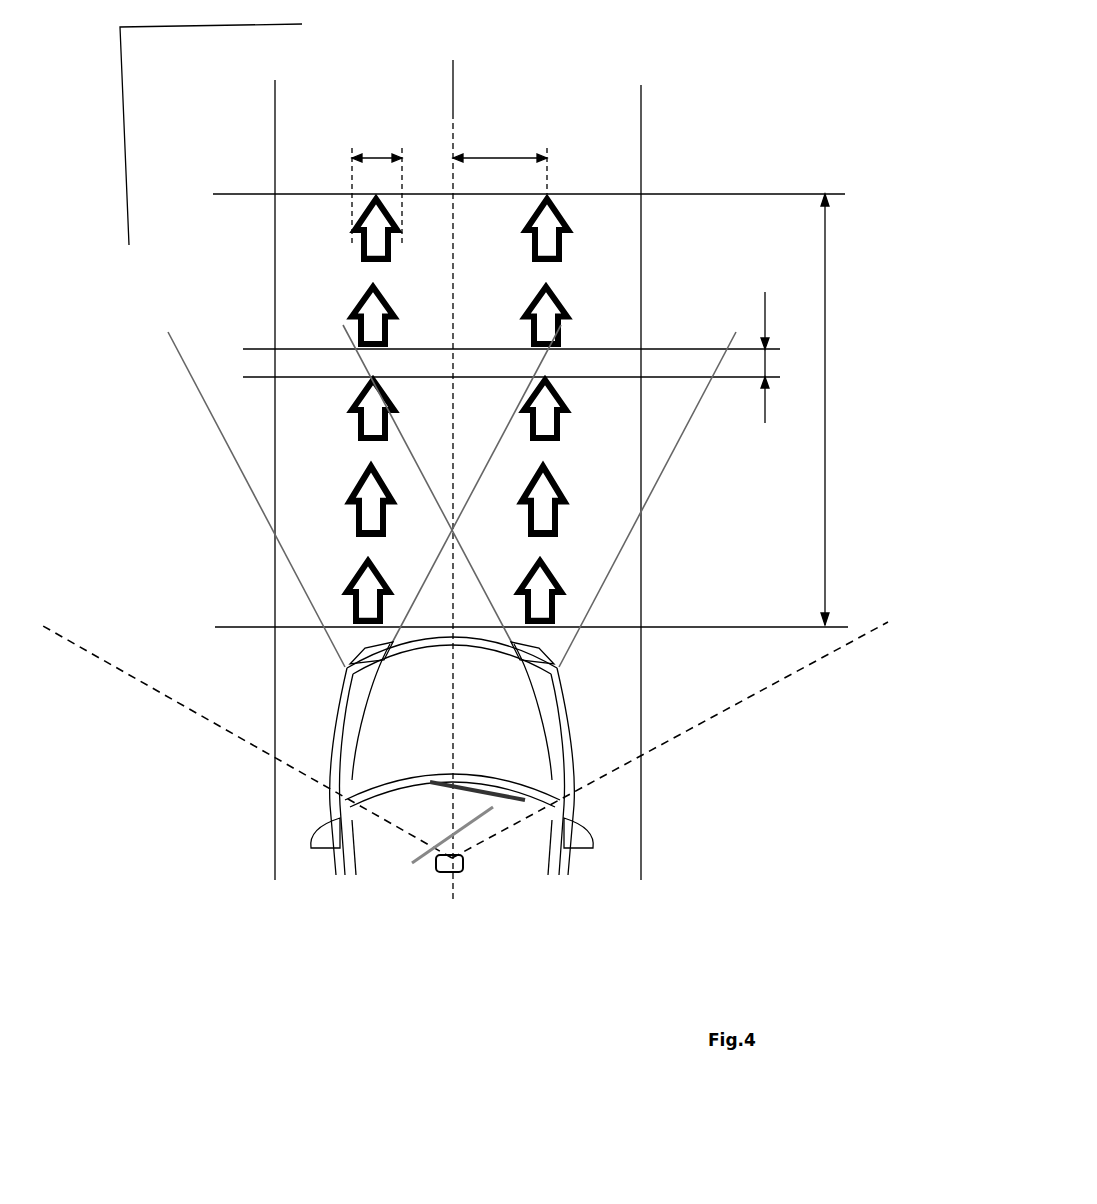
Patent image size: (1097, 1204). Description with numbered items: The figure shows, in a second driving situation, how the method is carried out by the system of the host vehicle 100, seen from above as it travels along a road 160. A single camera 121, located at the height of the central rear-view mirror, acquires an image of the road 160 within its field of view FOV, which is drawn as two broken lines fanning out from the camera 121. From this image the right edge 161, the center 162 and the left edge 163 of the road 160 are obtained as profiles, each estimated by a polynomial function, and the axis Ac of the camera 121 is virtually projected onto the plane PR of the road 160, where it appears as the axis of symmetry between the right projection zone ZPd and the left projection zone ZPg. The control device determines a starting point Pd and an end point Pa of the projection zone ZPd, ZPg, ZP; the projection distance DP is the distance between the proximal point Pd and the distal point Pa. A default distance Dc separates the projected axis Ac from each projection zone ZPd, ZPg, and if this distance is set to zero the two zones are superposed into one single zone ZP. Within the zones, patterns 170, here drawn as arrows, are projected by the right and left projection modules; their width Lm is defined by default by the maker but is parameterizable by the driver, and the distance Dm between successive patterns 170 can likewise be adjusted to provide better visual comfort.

The host vehicle 100 is at (575, 808).
The camera 121 is at (463, 868).
The road 160 is at (497, 463).
The right edge of the road 161 is at (641, 258).
The center of the road 162 is at (452, 108).
The left edge of the road 163 is at (275, 312).
The patterns 170 is at (357, 415).
The plane of the road PR is at (211, 134).
The width of the pattern Lm is at (377, 160).
The distance by default Dc is at (502, 157).
The end point Pa is at (762, 194).
The starting point Pd is at (843, 624).
The distance between each projected pattern Dm is at (765, 314).
The projection zone ZP is at (487, 413).
The projection distance DP is at (828, 482).
The left projection zone ZPg is at (320, 535).
The right projection zone ZPd is at (600, 540).
The field of view FOV is at (733, 705).
The axis of the camera Ac is at (450, 898).